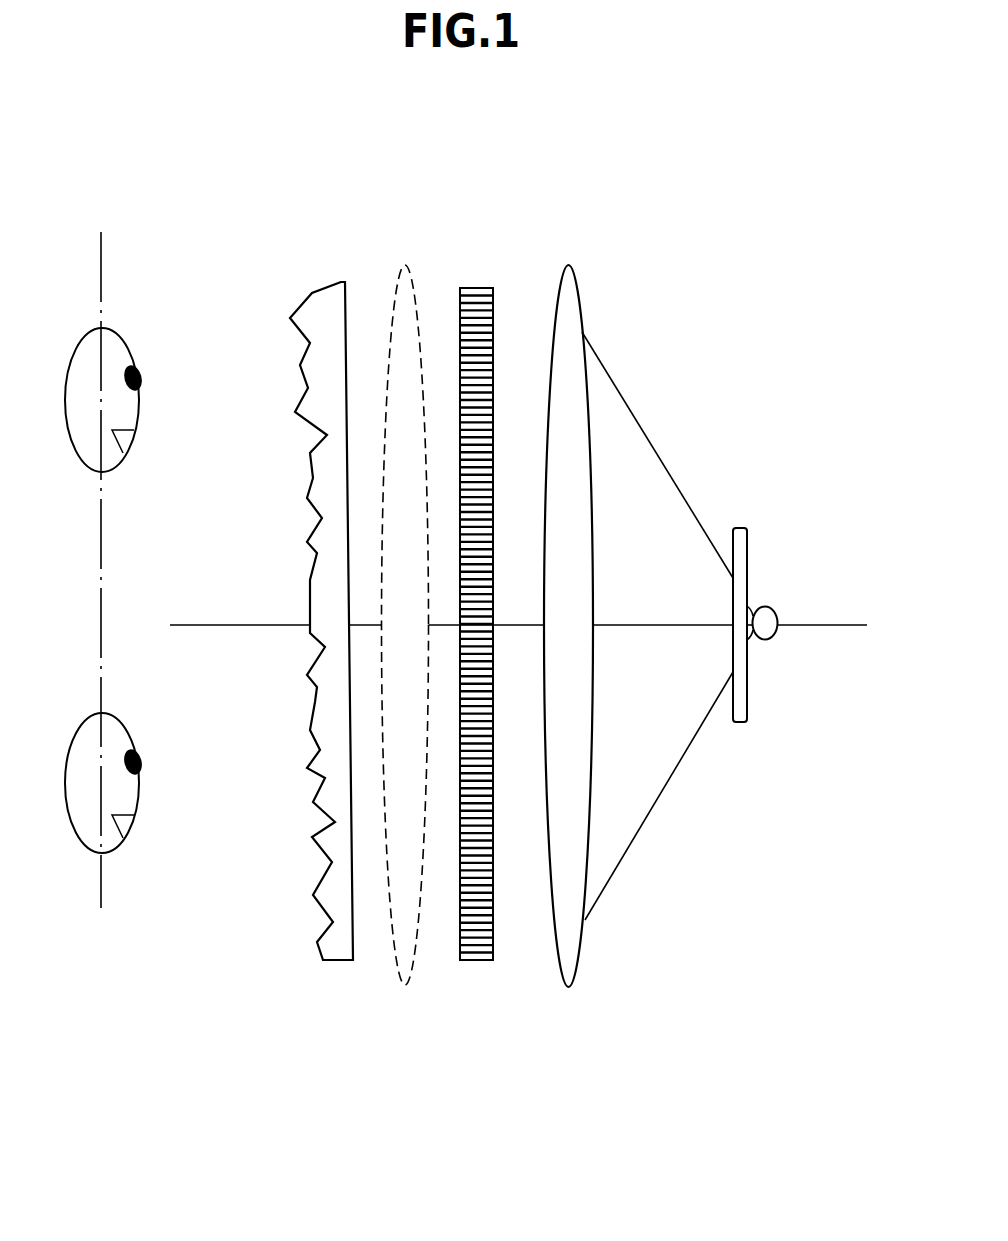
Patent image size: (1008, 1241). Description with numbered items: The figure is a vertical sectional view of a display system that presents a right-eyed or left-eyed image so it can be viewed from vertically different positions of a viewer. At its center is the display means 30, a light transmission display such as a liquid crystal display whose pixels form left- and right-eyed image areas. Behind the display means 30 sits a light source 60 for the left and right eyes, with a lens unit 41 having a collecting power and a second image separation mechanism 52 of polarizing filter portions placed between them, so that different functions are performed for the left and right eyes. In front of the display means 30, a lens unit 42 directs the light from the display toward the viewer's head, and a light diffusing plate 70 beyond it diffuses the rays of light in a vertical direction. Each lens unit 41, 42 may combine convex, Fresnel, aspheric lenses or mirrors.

The display means 30 is at (477, 270).
The lens unit 41 is at (565, 298).
The lens unit 42 is at (407, 943).
The second image separation mechanism 52 is at (742, 542).
The light source 60 is at (773, 638).
The light diffusing plate 70 is at (295, 333).